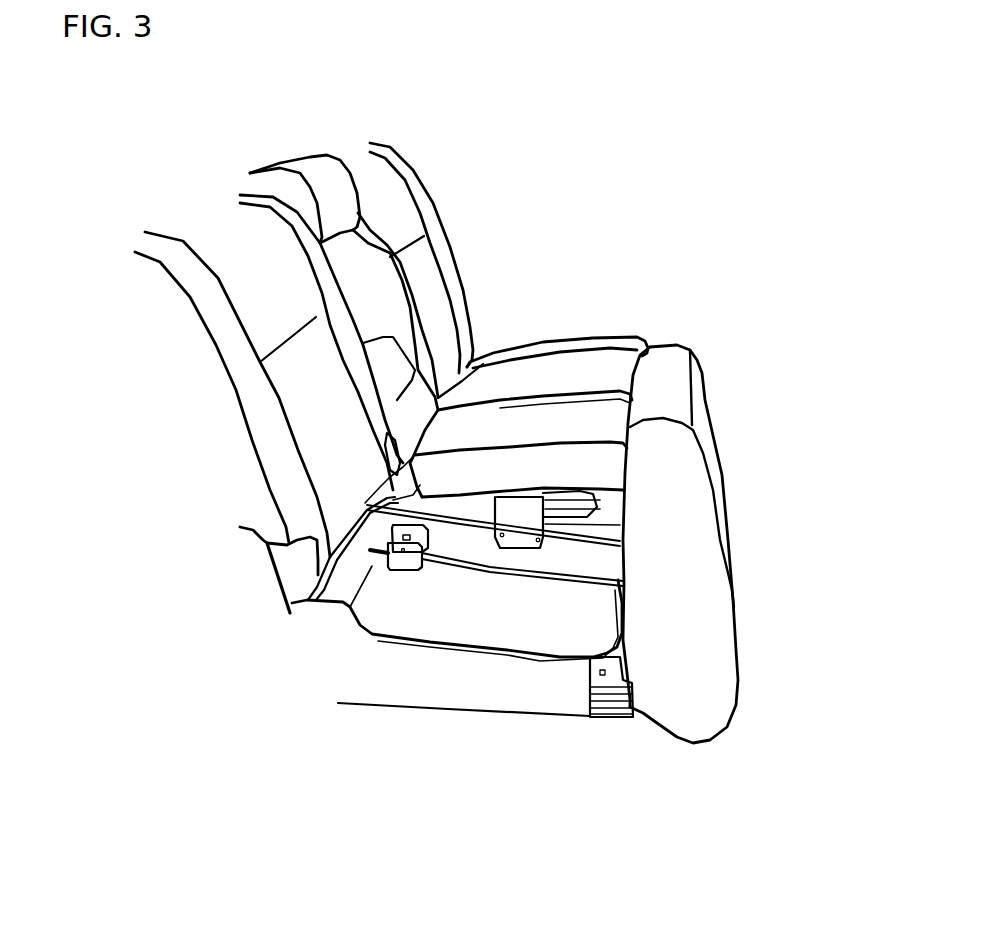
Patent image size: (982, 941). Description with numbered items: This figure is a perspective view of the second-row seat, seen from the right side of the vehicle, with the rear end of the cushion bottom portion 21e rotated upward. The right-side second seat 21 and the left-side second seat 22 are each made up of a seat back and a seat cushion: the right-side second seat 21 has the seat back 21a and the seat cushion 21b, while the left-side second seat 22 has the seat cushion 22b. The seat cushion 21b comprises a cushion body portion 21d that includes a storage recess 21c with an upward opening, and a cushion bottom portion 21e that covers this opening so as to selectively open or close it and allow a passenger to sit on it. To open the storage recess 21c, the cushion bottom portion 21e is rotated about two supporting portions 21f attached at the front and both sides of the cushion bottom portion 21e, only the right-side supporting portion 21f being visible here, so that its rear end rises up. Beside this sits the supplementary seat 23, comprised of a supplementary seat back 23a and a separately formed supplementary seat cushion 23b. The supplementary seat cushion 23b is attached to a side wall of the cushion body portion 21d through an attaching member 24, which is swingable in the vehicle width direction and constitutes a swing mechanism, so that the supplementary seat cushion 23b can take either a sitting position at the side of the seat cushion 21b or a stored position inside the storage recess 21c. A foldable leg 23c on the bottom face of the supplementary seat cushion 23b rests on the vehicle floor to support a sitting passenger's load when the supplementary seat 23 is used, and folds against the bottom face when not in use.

The right-side second seat 21 is at (182, 395).
The seat back 21a is at (213, 310).
The seat cushion 21b is at (285, 676).
The storage recess 21c is at (448, 615).
The cushion body portion 21d is at (350, 685).
The cushion bottom portion 21e is at (700, 675).
The supporting portion 21f is at (621, 720).
The left-side second seat 22 is at (437, 175).
The seat cushion 22b is at (543, 352).
The supplementary seat 23 is at (251, 154).
The supplementary seat back 23a is at (310, 170).
The supplementary seat cushion 23b is at (577, 423).
The foldable leg 23c is at (620, 493).
The attaching member 24 is at (520, 510).